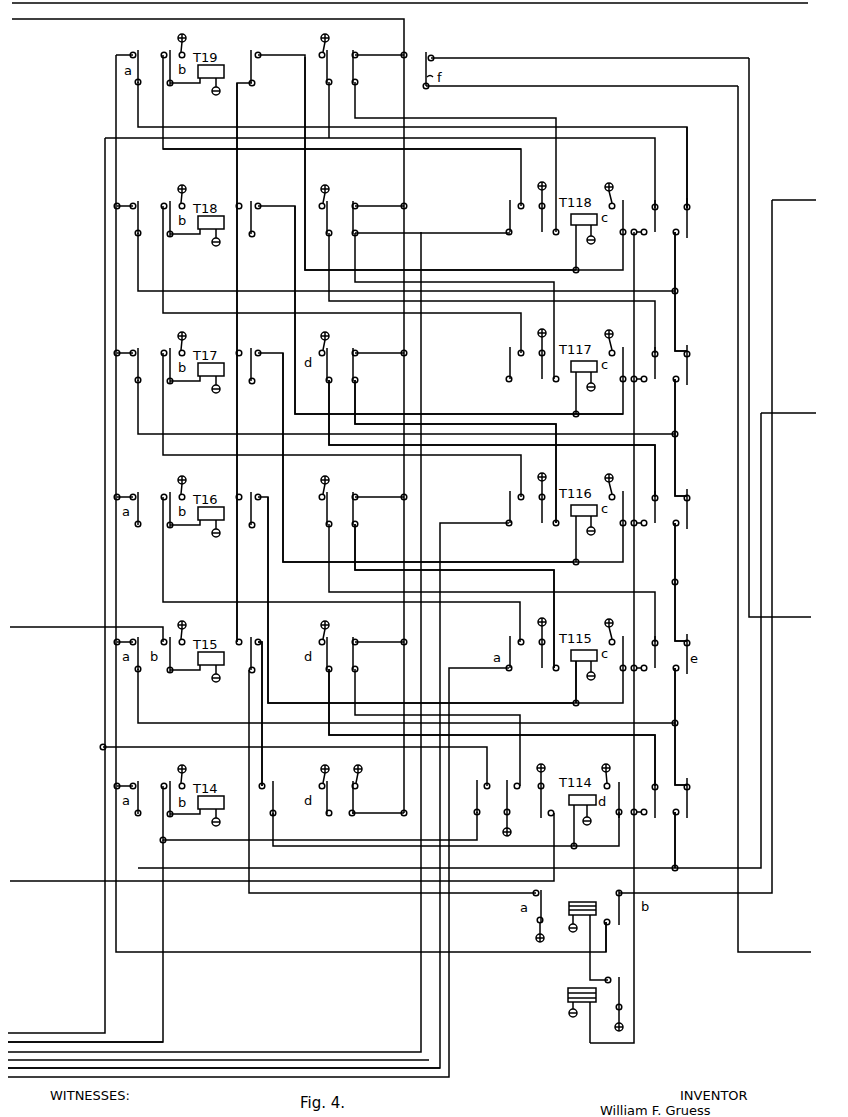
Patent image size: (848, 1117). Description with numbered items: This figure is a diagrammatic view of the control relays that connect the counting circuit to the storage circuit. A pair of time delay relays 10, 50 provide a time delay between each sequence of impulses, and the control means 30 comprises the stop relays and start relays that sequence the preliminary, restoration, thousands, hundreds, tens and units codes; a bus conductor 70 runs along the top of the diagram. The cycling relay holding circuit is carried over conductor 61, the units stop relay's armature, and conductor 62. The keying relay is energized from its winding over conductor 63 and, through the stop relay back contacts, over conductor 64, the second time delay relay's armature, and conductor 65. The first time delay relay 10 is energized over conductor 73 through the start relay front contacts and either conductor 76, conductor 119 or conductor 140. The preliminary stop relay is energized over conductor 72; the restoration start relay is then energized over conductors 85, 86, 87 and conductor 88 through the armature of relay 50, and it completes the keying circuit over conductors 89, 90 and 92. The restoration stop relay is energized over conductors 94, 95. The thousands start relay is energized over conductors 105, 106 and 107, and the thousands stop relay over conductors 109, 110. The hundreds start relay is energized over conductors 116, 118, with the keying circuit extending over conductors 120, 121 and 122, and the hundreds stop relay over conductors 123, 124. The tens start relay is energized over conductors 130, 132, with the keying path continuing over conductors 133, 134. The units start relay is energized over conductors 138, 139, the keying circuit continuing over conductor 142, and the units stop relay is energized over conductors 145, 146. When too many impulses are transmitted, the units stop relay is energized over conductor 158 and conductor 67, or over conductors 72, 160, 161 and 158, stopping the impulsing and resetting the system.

The time delay relay 10 is at (566, 996).
The control means 30 is at (67, 108).
The time delay relay 50 is at (564, 902).
The conductor 61 is at (749, 127).
The conductor 62 is at (544, 88).
The conductor 63 is at (772, 412).
The conductor 64 is at (262, 960).
The conductor 65 is at (695, 893).
The conductor 67 is at (684, 8).
The bus conductor 70 is at (70, 22).
The conductor 72 is at (164, 1000).
The conductor 73 is at (634, 976).
The conductor 76 is at (332, 735).
The conductor 85 is at (575, 840).
The conductor 86 is at (306, 854).
The conductor 87 is at (262, 780).
The conductor 88 is at (282, 896).
The conductor 89 is at (681, 858).
The conductor 90 is at (676, 776).
The conductor 92 is at (574, 730).
The conductor 94 is at (86, 621).
The conductor 95 is at (282, 847).
The conductor 105 is at (572, 698).
The conductor 106 is at (520, 702).
The conductor 107 is at (235, 578).
The conductor 109 is at (164, 604).
The conductor 110 is at (448, 1022).
The conductor 116 is at (513, 560).
The conductor 118 is at (234, 418).
The conductor 119 is at (330, 444).
The conductor 120 is at (693, 582).
The conductor 121 is at (676, 468).
The conductor 122 is at (571, 440).
The conductor 123 is at (160, 419).
The conductor 124 is at (484, 529).
The conductor 130 is at (502, 418).
The conductor 132 is at (238, 292).
The conductor 133 is at (692, 291).
The conductor 134 is at (619, 296).
The conductor 138 is at (478, 278).
The conductor 139 is at (238, 170).
The conductor 140 is at (655, 152).
The conductor 142 is at (686, 155).
The conductor 145 is at (292, 148).
The conductor 146 is at (421, 976).
The conductor 158 is at (104, 187).
The conductor 160 is at (220, 842).
The conductor 161 is at (143, 752).